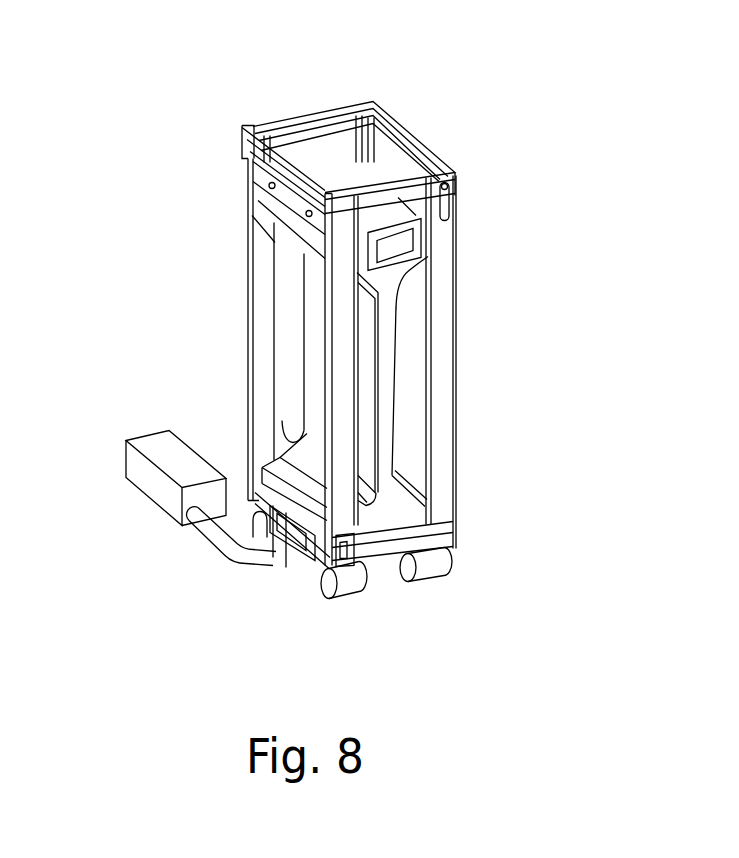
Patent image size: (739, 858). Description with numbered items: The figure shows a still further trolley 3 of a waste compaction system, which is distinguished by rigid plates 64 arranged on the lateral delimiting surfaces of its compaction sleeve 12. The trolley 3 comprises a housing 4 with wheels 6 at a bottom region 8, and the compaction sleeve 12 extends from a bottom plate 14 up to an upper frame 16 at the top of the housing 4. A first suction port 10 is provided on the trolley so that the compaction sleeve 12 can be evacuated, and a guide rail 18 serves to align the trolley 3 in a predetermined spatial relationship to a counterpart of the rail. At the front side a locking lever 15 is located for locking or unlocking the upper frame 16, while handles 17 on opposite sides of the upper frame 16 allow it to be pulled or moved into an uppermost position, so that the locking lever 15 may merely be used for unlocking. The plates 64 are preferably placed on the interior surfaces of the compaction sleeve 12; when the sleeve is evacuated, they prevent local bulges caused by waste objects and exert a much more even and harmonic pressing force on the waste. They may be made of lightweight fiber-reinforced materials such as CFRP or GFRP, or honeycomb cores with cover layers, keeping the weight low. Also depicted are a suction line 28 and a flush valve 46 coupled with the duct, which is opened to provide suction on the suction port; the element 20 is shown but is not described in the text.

The trolley 3 is at (535, 84).
The housing 4 is at (442, 355).
The wheels 6 is at (342, 595).
The bottom region 8 is at (461, 538).
The first suction port 10 is at (290, 568).
The compaction sleeve 12 is at (308, 428).
The bottom plate 14 is at (383, 547).
The locking lever 15 is at (455, 193).
The upper frame 16 is at (380, 174).
The handles 17 is at (388, 270).
The guide rail 18 is at (248, 173).
The top frame 20 is at (315, 174).
The suction line 28 is at (242, 560).
The flush valve 46 is at (152, 490).
The rigid plates 64 is at (395, 395).